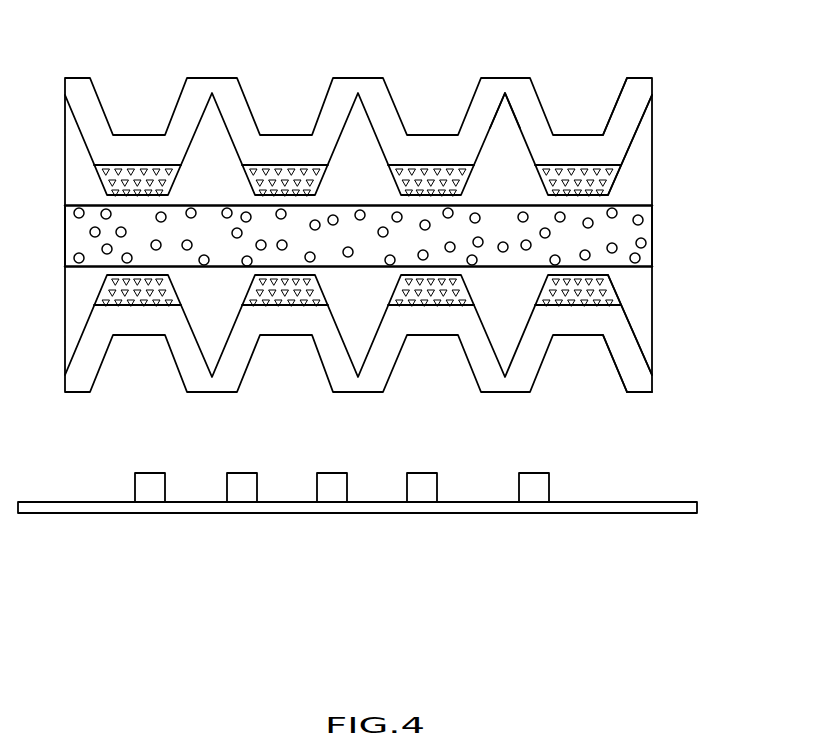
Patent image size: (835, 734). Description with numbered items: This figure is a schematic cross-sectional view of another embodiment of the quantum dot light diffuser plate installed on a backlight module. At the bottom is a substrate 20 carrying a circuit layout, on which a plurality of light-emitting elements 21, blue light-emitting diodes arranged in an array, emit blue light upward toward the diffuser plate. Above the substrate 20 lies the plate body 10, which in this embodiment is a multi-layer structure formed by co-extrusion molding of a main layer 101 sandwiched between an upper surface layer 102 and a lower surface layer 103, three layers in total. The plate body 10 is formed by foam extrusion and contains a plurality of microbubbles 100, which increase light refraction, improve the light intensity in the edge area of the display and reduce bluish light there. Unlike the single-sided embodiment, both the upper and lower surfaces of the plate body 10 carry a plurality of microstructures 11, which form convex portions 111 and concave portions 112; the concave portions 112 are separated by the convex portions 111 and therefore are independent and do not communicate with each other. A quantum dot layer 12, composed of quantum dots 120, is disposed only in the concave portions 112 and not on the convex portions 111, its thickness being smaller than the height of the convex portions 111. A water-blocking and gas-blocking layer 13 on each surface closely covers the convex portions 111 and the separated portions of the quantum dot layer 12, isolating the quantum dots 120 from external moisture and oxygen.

The plate body 10 is at (412, 240).
The microbubbles 100 is at (647, 243).
The main layer 101 is at (652, 257).
The upper surface layer 102 is at (652, 201).
The lower surface layer 103 is at (652, 268).
The microstructures 11 is at (652, 162).
The convex portions 111 is at (497, 113).
The concave portions 112 is at (433, 192).
The quantum dot layer 12 is at (640, 127).
The water-blocking and gas-blocking layer 13 is at (505, 90).
The quantum dots 120 is at (143, 170).
The substrate 20 is at (697, 502).
The light-emitting elements 21 is at (143, 482).